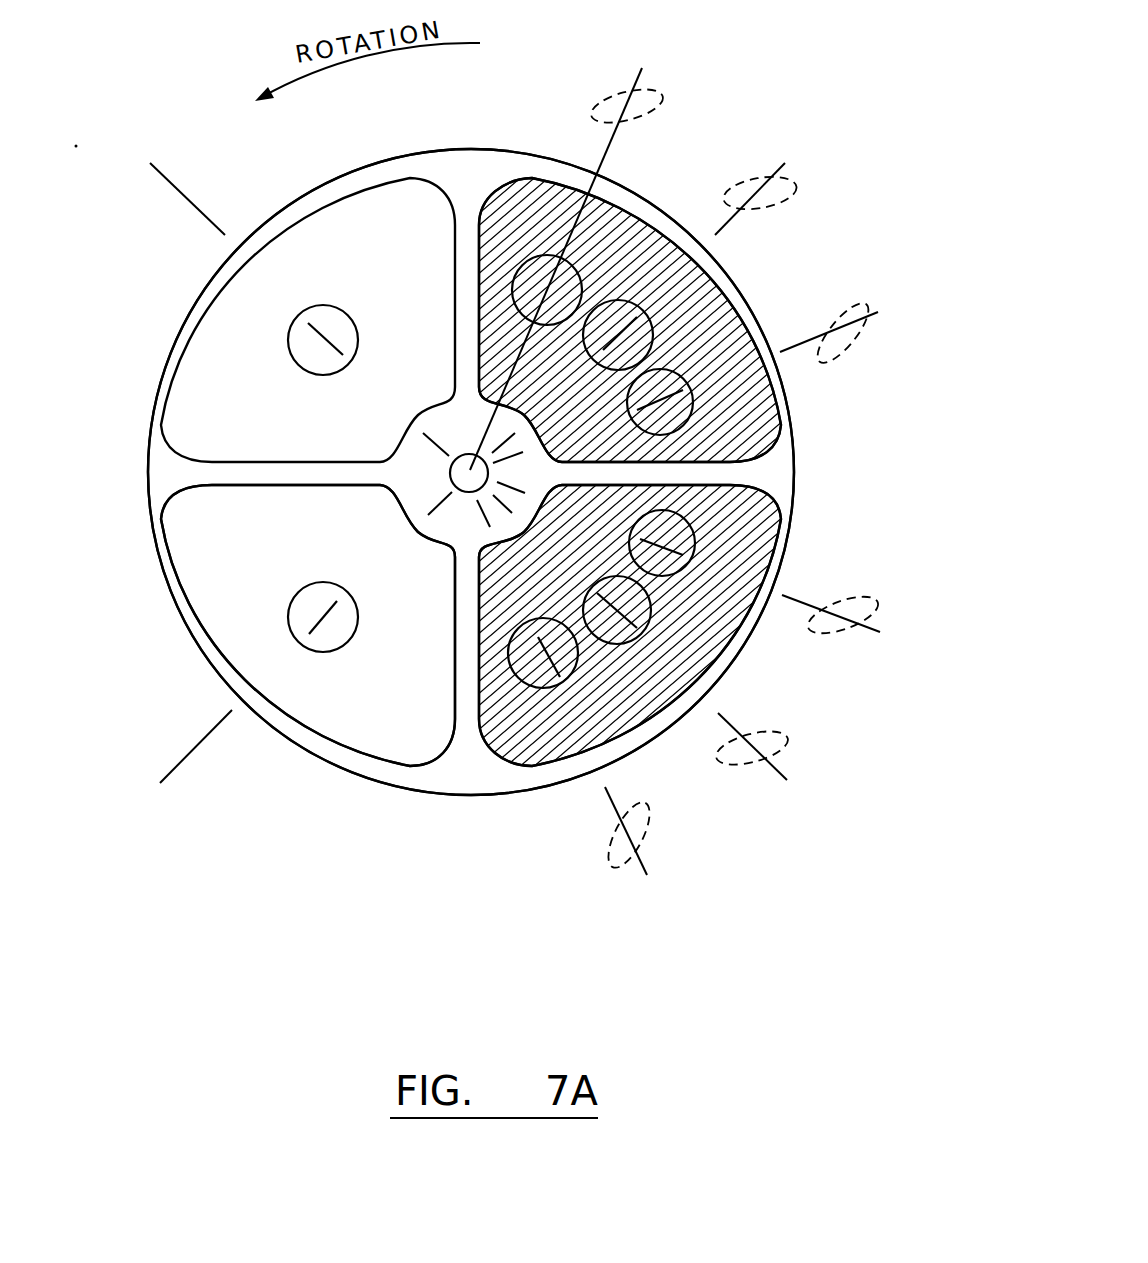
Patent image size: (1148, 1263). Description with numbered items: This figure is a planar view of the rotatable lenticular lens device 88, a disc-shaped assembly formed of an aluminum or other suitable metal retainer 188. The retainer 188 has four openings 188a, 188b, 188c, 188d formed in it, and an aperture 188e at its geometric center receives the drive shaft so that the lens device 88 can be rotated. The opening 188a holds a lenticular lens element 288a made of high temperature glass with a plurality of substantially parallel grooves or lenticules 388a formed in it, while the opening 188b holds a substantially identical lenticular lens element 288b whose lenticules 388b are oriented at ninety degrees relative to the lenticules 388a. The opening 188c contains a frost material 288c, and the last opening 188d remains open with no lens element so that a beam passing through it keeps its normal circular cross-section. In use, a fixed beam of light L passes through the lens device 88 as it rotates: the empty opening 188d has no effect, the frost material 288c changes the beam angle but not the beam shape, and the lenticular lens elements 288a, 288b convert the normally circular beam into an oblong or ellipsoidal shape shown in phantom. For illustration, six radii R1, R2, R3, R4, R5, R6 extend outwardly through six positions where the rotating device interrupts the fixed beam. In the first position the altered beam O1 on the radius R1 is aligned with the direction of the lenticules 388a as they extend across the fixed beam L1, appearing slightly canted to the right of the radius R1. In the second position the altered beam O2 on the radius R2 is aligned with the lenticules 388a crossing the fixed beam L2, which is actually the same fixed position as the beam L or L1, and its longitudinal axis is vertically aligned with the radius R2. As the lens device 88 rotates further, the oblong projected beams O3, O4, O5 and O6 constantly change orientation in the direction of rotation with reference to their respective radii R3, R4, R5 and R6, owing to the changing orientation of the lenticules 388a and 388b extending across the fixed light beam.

The lenticular lens device 88 is at (397, 147).
The retainer 188 is at (190, 303).
The opening 188a is at (618, 198).
The opening 188b is at (727, 647).
The opening 188c is at (305, 735).
The opening 188d is at (193, 330).
The aperture 188e is at (455, 471).
The lenticular lens element 288a is at (723, 275).
The lenticular lens element 288b is at (647, 728).
The frost material 288c is at (212, 597).
The lenticules 388a is at (703, 300).
The lenticules 388b is at (573, 745).
The beam of light L is at (348, 312).
The fixed beam L1 is at (575, 268).
The fixed beam L2 is at (653, 328).
The altered beam O1 is at (663, 92).
The altered beam O2 is at (797, 192).
The oblong projected beam O3 is at (860, 338).
The oblong projected beam O4 is at (850, 603).
The oblong projected beam O5 is at (783, 738).
The oblong projected beam O6 is at (647, 828).
The radius R1 is at (613, 139).
The radius R2 is at (740, 220).
The radius R3 is at (797, 347).
The radius R4 is at (798, 600).
The radius R5 is at (773, 770).
The radius R6 is at (640, 861).